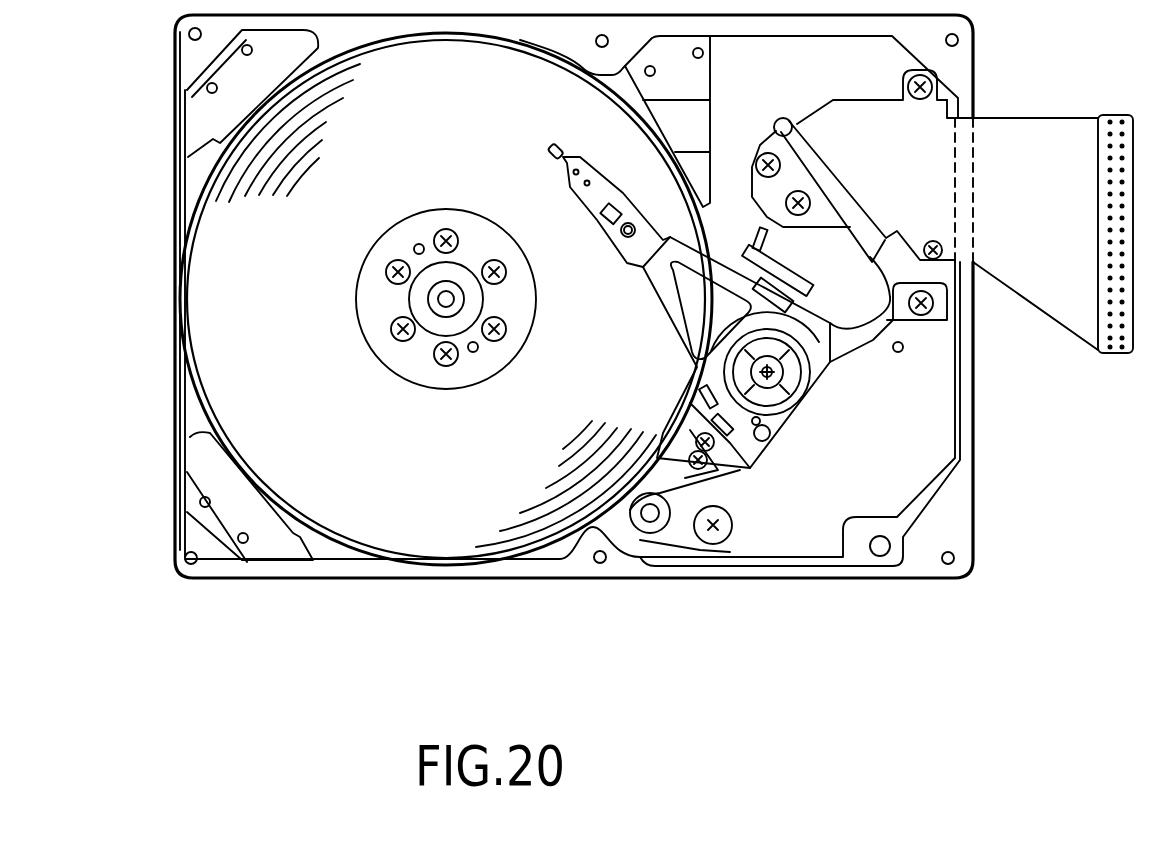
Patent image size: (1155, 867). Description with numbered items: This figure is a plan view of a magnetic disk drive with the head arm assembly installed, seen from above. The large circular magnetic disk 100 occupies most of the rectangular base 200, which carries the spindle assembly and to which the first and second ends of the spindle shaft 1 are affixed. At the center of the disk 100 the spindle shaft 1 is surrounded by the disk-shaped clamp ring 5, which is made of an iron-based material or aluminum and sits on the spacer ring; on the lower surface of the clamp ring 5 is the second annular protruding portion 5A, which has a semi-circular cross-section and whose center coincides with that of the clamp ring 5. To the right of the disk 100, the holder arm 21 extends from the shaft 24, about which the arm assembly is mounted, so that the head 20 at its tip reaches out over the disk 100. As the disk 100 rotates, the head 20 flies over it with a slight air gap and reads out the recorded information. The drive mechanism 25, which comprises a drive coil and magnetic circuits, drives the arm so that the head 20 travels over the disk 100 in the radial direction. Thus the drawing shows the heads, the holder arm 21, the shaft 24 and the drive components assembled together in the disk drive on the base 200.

The spindle shaft 1 is at (448, 290).
The clamp ring 5 is at (392, 381).
The second annular protruding portion 5A is at (446, 230).
The head 20 is at (555, 147).
The holder arm 21 is at (662, 280).
The shaft 24 is at (809, 368).
The drive mechanism 25 is at (930, 458).
The magnetic disk 100 is at (416, 538).
The base 200 is at (210, 566).